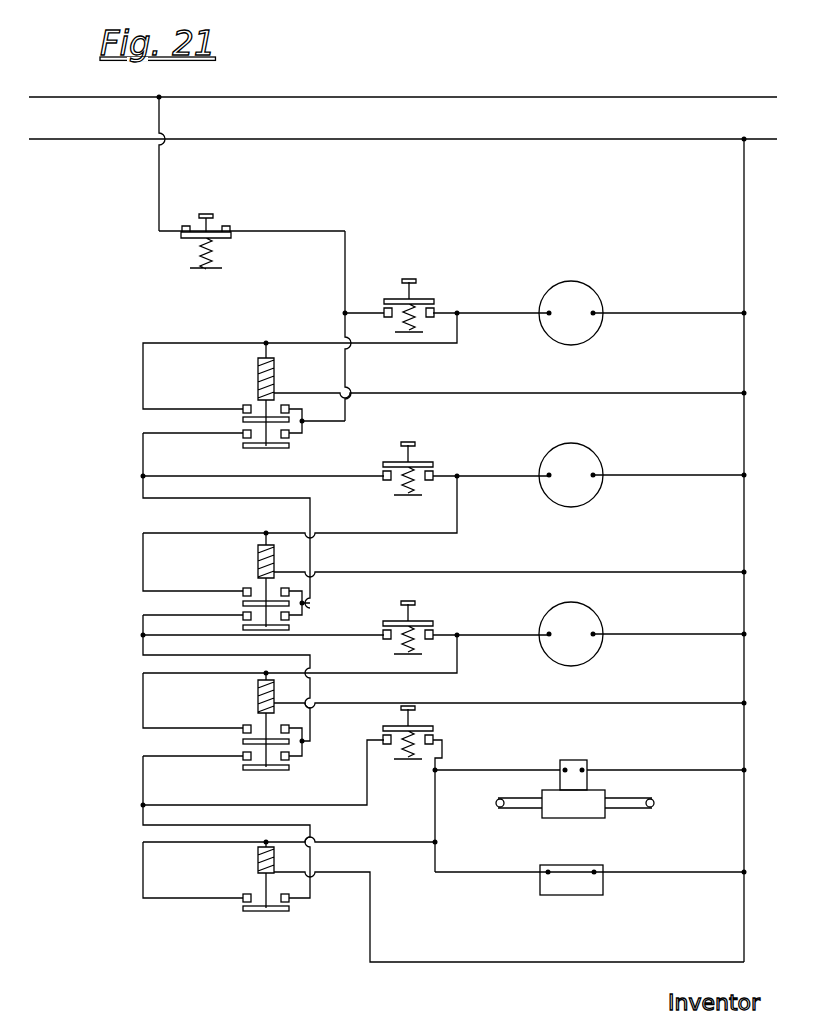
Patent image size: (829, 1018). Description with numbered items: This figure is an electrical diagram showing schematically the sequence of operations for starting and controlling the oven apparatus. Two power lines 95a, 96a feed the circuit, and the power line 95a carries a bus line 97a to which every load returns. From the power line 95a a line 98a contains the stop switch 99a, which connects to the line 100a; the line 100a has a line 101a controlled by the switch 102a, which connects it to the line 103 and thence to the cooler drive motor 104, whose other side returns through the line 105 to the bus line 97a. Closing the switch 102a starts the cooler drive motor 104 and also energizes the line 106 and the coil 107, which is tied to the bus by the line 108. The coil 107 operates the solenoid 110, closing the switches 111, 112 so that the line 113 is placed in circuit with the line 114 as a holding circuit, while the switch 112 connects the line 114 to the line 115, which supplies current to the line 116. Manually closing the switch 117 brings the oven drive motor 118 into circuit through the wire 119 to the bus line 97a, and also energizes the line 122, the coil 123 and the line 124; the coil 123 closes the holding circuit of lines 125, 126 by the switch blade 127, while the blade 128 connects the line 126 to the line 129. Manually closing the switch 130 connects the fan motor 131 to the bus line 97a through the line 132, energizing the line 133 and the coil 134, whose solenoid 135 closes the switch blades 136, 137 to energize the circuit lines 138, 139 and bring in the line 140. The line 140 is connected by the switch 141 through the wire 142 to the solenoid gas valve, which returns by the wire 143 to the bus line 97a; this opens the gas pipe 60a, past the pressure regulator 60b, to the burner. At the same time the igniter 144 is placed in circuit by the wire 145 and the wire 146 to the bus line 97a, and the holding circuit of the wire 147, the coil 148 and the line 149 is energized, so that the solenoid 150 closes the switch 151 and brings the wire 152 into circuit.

The power line 95a is at (478, 97).
The power line 96a is at (527, 139).
The bus line 97a is at (744, 198).
The line 98a is at (159, 190).
The stop switch 99a is at (192, 242).
The line 100a is at (305, 231).
The line 101a is at (360, 310).
The switch 102a is at (422, 294).
The line 103 is at (446, 312).
The cooler drive motor 104 is at (559, 330).
The line 105 is at (682, 314).
The line 106 is at (416, 343).
The coil 107 is at (258, 370).
The line 108 is at (572, 395).
The solenoid 110 is at (272, 392).
The switch 111 is at (243, 421).
The switch 112 is at (243, 445).
The line 113 is at (228, 344).
The line 114 is at (345, 409).
The line 115 is at (143, 460).
The line 116 is at (335, 476).
The switch 117 is at (420, 464).
The oven drive motor 118 is at (560, 492).
The wire 119 is at (680, 475).
The line 122 is at (389, 536).
The coil 123 is at (258, 557).
The line 124 is at (432, 575).
The line 125 is at (143, 562).
The line 126 is at (310, 597).
The switch blade 127 is at (243, 604).
The switch blade 128 is at (243, 627).
The line 129 is at (363, 636).
The switch 130 is at (424, 626).
The fan motor 131 is at (559, 650).
The line 132 is at (682, 636).
The line 133 is at (375, 673).
The coil 134 is at (258, 692).
The solenoid 135 is at (258, 712).
The switch blade 136 is at (243, 742).
The switch blade 137 is at (243, 768).
The circuit line 138 is at (310, 730).
The circuit line 139 is at (143, 700).
The line 140 is at (322, 808).
The switch 141 is at (426, 733).
The wire 142 is at (536, 772).
The wire 143 is at (700, 772).
The pressure regulator 60b is at (566, 778).
The gas pipe 60a is at (630, 806).
The wire 145 is at (435, 817).
The wire 147 is at (394, 844).
The wire 152 is at (143, 870).
The coil 148 is at (258, 861).
The solenoid 150 is at (257, 877).
The switch 151 is at (258, 912).
The line 149 is at (449, 961).
The wire 146 is at (700, 874).
The igniter 144 is at (576, 896).